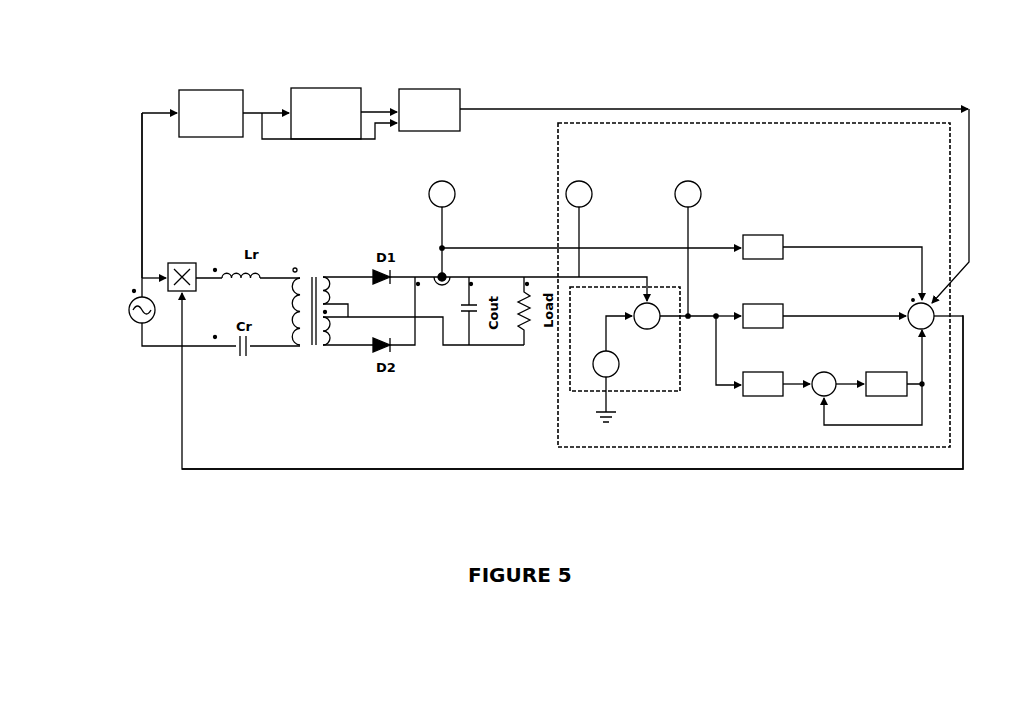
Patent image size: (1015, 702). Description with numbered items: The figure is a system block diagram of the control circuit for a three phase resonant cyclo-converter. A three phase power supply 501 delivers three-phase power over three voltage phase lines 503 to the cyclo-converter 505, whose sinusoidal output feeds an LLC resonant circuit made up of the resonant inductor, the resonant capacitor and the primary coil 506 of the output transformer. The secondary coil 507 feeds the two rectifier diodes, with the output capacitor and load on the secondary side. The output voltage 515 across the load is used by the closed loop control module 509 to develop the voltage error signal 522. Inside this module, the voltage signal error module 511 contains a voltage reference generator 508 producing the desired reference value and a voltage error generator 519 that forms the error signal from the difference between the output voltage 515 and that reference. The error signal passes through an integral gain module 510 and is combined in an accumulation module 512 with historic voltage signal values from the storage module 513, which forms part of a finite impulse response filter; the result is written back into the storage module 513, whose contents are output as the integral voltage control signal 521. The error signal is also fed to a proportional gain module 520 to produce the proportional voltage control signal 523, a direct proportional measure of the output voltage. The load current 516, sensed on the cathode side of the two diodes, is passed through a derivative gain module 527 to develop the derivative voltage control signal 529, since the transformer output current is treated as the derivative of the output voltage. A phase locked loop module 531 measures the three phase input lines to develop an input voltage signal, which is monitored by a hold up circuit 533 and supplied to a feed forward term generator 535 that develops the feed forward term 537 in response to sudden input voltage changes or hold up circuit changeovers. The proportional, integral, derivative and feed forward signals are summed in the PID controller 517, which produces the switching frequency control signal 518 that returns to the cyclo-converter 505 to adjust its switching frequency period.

The three phase power supply 501 is at (136, 322).
The voltage phase lines 503 is at (137, 281).
The cyclo-converter 505 is at (182, 263).
The primary coil 506 is at (299, 346).
The secondary coil 507 is at (323, 272).
The voltage reference generator 508 is at (617, 374).
The closed loop control module 509 is at (558, 432).
The integral gain module 510 is at (765, 372).
The voltage signal error module 511 is at (570, 391).
The accumulation module 512 is at (815, 397).
The storage module 513 is at (880, 372).
The output voltage 515 is at (590, 183).
The load current 516 is at (453, 184).
The PID controller 517 is at (934, 323).
The switching frequency control signal 518 is at (577, 470).
The voltage error generator 519 is at (652, 328).
The proportional gain module 520 is at (765, 305).
The integral voltage control signal 521 is at (923, 352).
The voltage error signal 522 is at (698, 183).
The proportional voltage control signal 523 is at (836, 316).
The derivative gain module 527 is at (767, 235).
The derivative voltage control signal 529 is at (845, 247).
The phase locked loop module 531 is at (195, 90).
The hold up circuit 533 is at (307, 88).
The feed forward term generator 535 is at (415, 89).
The feed forward term 537 is at (603, 109).